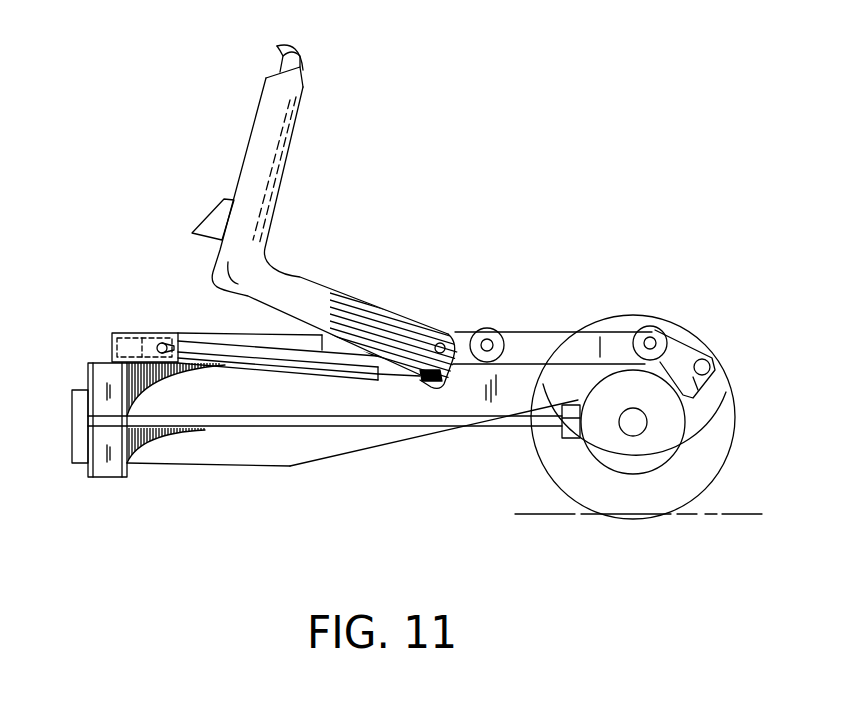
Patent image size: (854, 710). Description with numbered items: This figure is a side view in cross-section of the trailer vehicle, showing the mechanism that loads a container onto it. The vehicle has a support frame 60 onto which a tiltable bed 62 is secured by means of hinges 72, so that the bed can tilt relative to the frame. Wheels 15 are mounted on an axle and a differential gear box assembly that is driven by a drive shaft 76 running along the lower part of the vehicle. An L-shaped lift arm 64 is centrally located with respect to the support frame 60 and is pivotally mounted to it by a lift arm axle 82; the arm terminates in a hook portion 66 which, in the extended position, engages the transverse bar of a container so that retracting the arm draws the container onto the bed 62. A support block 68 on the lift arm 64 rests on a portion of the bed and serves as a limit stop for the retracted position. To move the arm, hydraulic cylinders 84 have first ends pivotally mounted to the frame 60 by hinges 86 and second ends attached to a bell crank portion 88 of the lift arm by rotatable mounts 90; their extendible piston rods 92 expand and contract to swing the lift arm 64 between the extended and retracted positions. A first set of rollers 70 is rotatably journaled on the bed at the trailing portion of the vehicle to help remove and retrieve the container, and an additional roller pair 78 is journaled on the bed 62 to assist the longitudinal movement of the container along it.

The wheels 15 is at (633, 495).
The support frame 60 is at (187, 467).
The tiltable bed 62 is at (275, 342).
The lift arm 64 is at (272, 163).
The hook portion 66 is at (298, 56).
The support block 68 is at (213, 222).
The rollers 70 is at (660, 330).
The hinges 72 is at (705, 378).
The drive shaft 76 is at (490, 427).
The roller pair 78 is at (495, 330).
The lift arm axle 82 is at (448, 338).
The hydraulic cylinders 84 is at (317, 367).
The hinges 86 is at (150, 340).
The bell crank portion 88 is at (423, 380).
The rotatable mounts 90 is at (418, 407).
The piston rods 92 is at (398, 355).